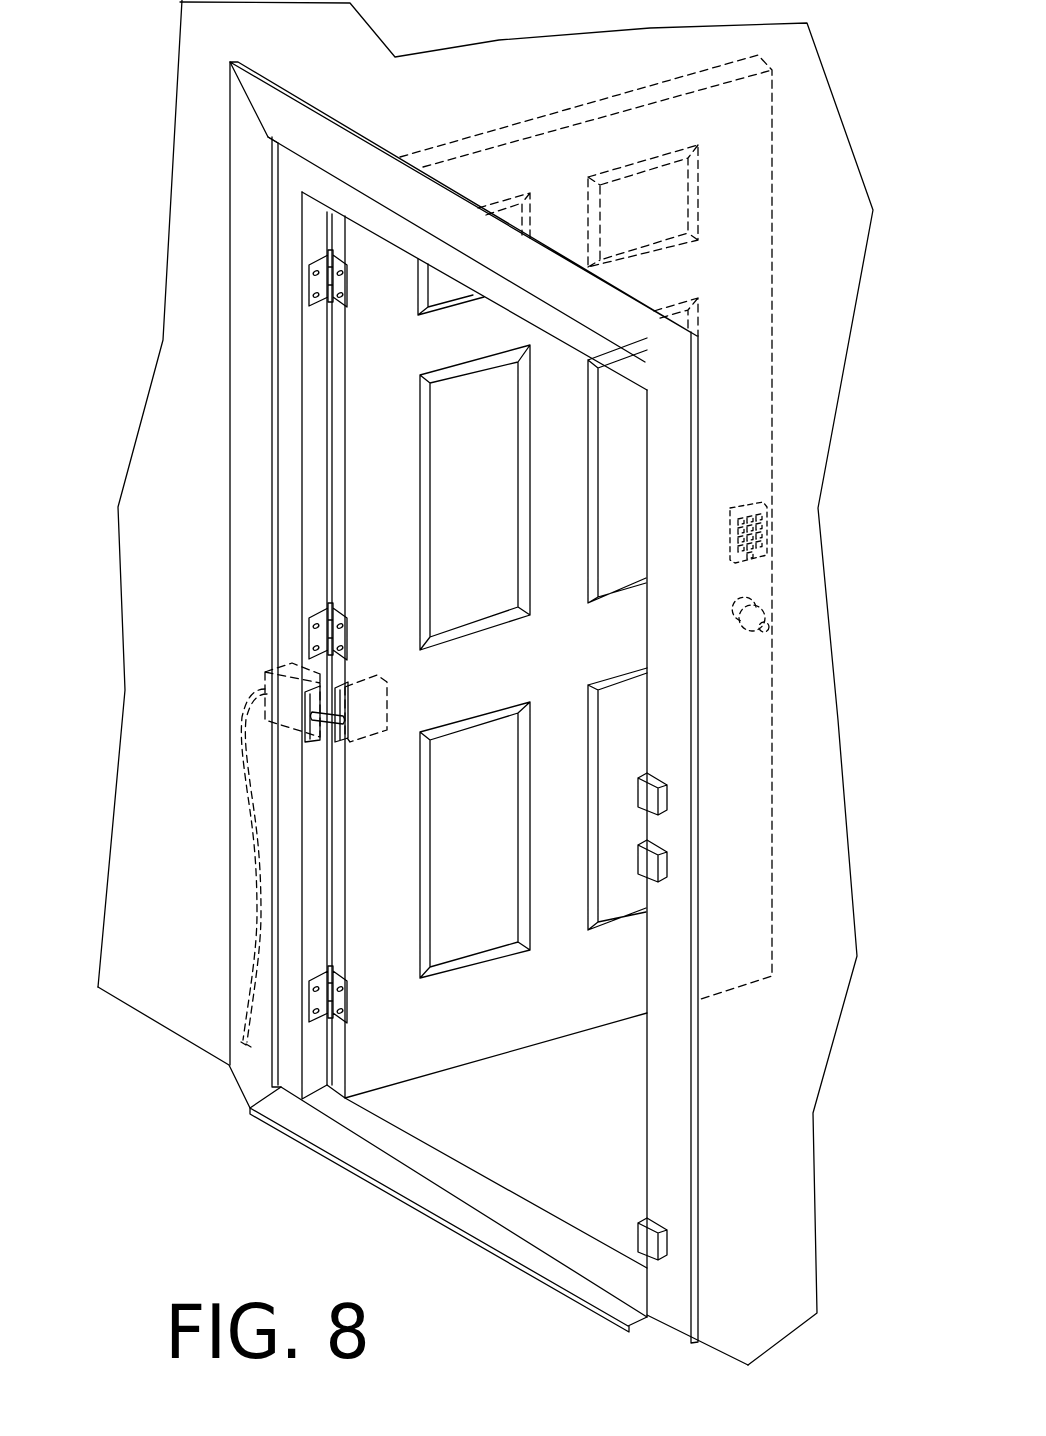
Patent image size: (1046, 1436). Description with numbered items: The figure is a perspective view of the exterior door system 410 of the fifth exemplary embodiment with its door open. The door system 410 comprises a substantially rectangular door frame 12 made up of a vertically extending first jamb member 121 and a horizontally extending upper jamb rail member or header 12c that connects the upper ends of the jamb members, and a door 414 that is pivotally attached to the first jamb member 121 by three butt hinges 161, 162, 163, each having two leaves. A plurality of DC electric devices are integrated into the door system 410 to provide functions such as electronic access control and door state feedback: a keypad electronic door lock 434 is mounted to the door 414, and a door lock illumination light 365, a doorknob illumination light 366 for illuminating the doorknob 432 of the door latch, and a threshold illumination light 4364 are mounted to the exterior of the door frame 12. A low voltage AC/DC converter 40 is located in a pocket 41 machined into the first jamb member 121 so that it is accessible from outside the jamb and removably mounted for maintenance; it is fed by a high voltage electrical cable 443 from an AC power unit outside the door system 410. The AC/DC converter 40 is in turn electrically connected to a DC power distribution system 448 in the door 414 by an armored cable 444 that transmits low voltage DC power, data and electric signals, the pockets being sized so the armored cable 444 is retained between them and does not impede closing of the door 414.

The door frame 12 is at (428, 702).
The first jamb member 121 is at (306, 398).
The upper jamb rail member or header 12c is at (375, 218).
The hinge 161 is at (340, 636).
The hinge 162 is at (340, 282).
The hinge 163 is at (340, 1000).
The low voltage AC/DC converter 40 is at (290, 672).
The pocket 41 is at (292, 730).
The armored cable 444 is at (310, 744).
The DC power distribution system 448 is at (378, 700).
The cable 443 is at (255, 874).
The door system 410 is at (782, 238).
The door 414 is at (742, 770).
The keypad electronic door lock 434 is at (748, 498).
The doorknob 432 is at (745, 632).
The door lock illumination light 365 is at (670, 800).
The doorknob illumination light 366 is at (670, 868).
The threshold illumination light 4364 is at (670, 1244).